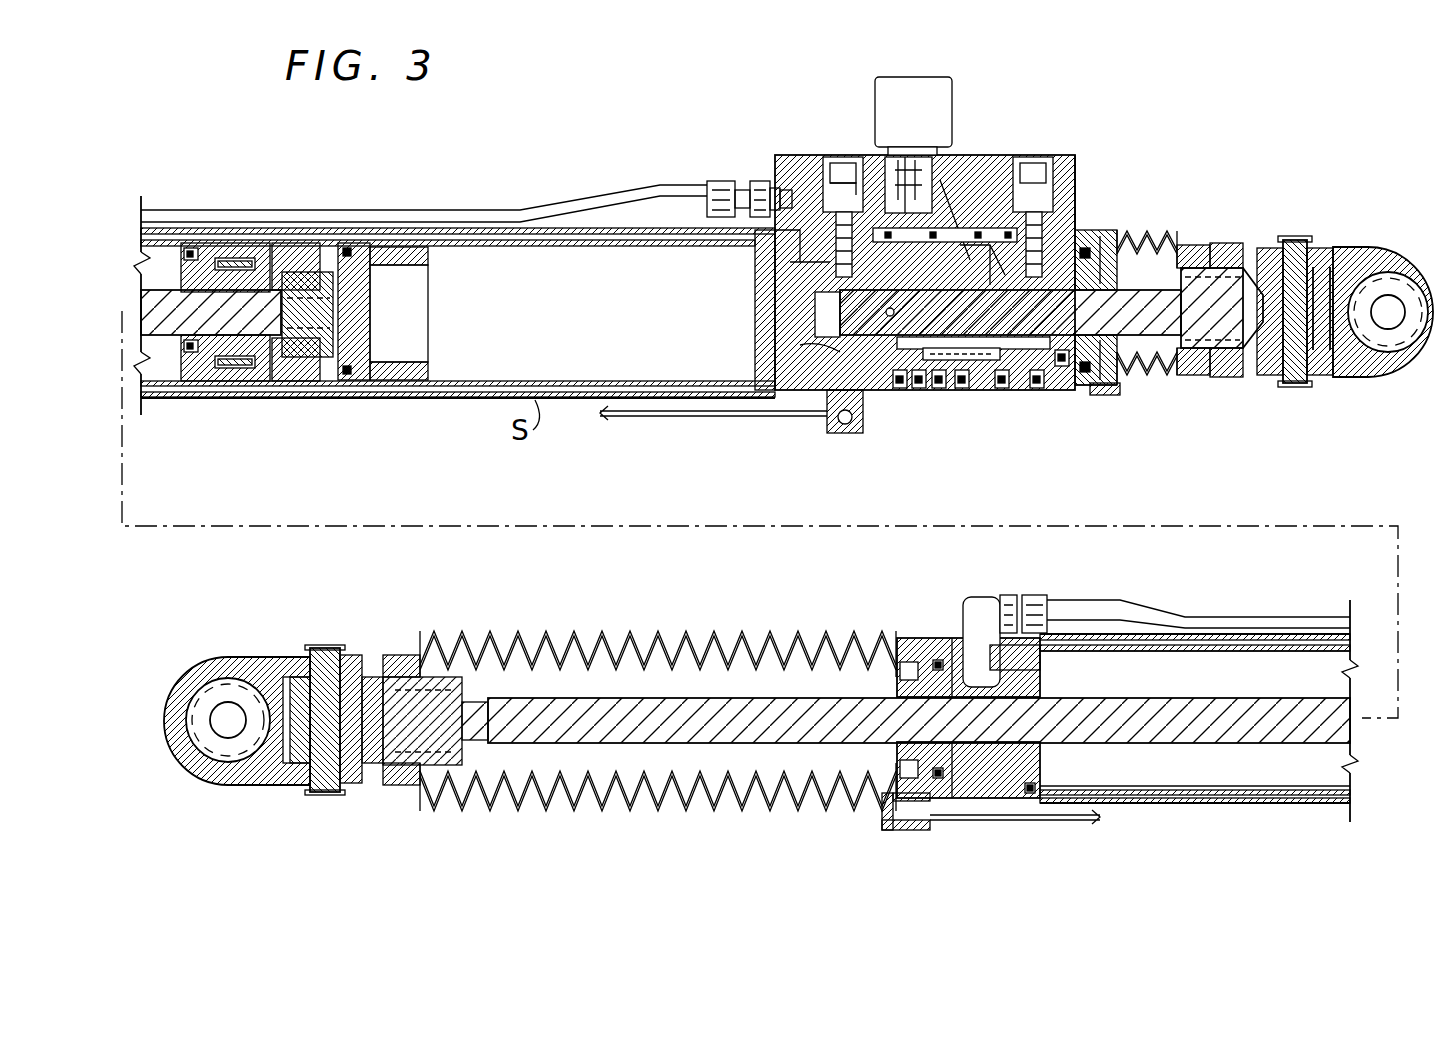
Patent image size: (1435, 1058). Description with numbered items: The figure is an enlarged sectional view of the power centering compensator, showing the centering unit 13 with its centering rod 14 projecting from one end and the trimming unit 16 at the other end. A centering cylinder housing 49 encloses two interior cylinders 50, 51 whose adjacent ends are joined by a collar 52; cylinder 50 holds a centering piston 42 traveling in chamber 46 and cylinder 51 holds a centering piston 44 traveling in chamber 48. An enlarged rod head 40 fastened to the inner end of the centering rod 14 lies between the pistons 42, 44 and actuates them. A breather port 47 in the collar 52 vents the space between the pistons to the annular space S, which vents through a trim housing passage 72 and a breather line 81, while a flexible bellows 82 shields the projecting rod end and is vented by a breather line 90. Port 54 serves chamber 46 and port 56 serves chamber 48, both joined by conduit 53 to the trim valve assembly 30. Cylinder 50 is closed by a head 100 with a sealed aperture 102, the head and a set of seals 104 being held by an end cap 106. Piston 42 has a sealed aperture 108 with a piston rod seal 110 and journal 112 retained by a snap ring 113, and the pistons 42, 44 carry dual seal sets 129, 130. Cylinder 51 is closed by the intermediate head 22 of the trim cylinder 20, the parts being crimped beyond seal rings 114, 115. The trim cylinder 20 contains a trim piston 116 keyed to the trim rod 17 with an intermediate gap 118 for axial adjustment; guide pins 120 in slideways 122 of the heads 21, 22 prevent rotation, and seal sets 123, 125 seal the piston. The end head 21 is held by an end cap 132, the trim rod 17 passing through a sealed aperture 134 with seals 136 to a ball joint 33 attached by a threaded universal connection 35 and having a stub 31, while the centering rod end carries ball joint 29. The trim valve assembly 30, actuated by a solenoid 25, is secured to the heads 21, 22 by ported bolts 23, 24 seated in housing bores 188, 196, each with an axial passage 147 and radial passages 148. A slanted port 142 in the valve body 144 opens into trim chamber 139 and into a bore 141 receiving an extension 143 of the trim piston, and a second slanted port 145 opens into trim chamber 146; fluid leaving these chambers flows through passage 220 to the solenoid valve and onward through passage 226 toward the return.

The centering unit 13 is at (1258, 808).
The centering rod 14 is at (657, 697).
The trimming unit 16 is at (1095, 465).
The trim rod 17 is at (1051, 310).
The trim cylinder 20 is at (1005, 390).
The end head 21 is at (1105, 390).
The intermediate head 22 is at (760, 357).
The bolt 23 is at (838, 160).
The bolt 24 is at (1035, 165).
The solenoid 25 is at (893, 76).
The ball joint 29 is at (228, 657).
The trim valve assembly 30 is at (1183, 170).
The stub 31 is at (323, 647).
The ball joint 33 is at (1388, 250).
The universal connection 35 is at (1297, 240).
The rod head 40 is at (355, 283).
The centering piston 42 is at (230, 374).
The centering piston 44 is at (438, 318).
The chamber 46 is at (1195, 659).
The breather port 47 is at (300, 245).
The chamber 48 is at (458, 307).
The centering cylinder housing 49 is at (1158, 805).
The interior cylinder 50 is at (1200, 795).
The interior cylinder 51 is at (593, 380).
The collar 52 is at (302, 396).
The conduit 53 is at (1095, 604).
The port 54 is at (1052, 660).
The port 56 is at (697, 247).
The trim housing passage 72 is at (845, 435).
The breather line 81 is at (655, 418).
The flexible bellows 82 is at (652, 806).
The breather line 90 is at (1003, 822).
The head 100 is at (1042, 770).
The journaled and sealed aperture 102 is at (1042, 690).
The set of multiple seals 104 is at (870, 762).
The end cap 106 is at (893, 672).
The sealed aperture 108 is at (179, 346).
The piston rod seal 110 is at (205, 250).
The journal 112 is at (240, 262).
The snap ring 113 is at (190, 255).
The seal ring 114 is at (757, 247).
The seal ring 115 is at (900, 390).
The trim piston 116 is at (945, 390).
The intermediate gap 118 is at (760, 345).
The guide pins 120 is at (1038, 390).
The slideways 122 is at (1062, 385).
The set of dual circumferential seals 123 is at (925, 390).
The set of dual circumferential seals 125 is at (965, 390).
The set of dual circumferential seals 129 is at (266, 378).
The set of dual circumferential seals 130 is at (353, 376).
The end cap 132 is at (1150, 372).
The journaled and sealed aperture 134 is at (1150, 247).
The set of multiple seals 136 is at (1150, 233).
The trim chamber 139 is at (985, 170).
The bore 141 is at (755, 300).
The slanted port 142 is at (755, 277).
The extension 143 is at (815, 380).
The trim valve body 144 is at (752, 330).
The second slanted port 145 is at (1040, 185).
The trim chamber 146 is at (1000, 200).
The axial passage 147 is at (1108, 245).
The radial passages 148 is at (1092, 230).
The housing bore 188 is at (805, 170).
The housing bore 196 is at (1080, 174).
The passage 220 is at (960, 160).
The passage 226 is at (880, 170).